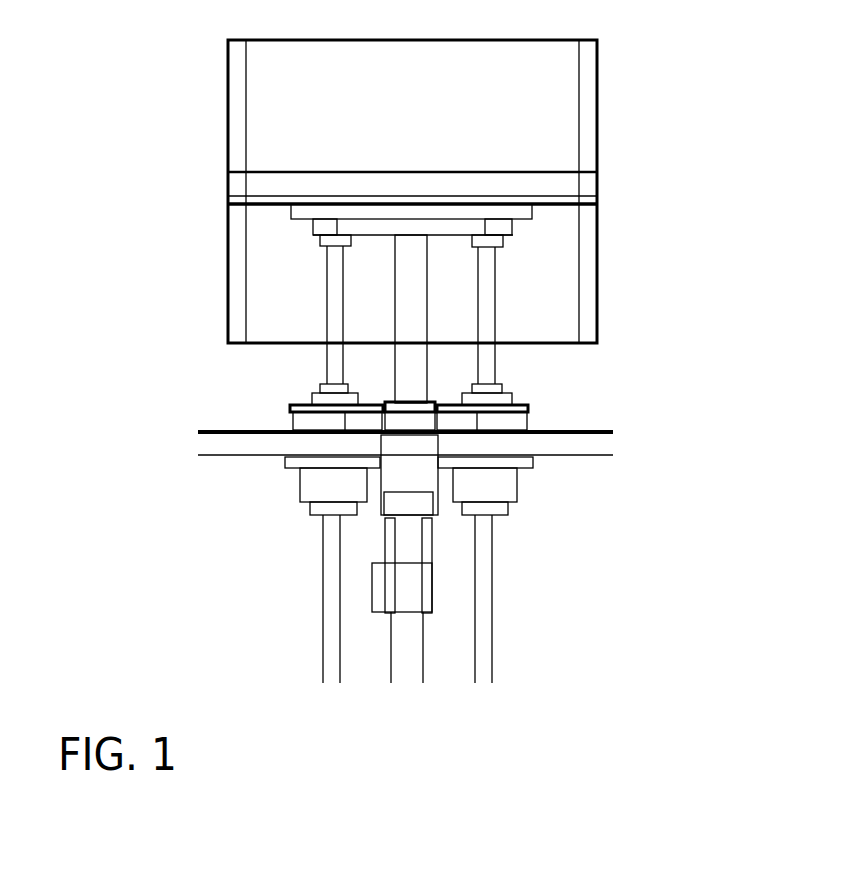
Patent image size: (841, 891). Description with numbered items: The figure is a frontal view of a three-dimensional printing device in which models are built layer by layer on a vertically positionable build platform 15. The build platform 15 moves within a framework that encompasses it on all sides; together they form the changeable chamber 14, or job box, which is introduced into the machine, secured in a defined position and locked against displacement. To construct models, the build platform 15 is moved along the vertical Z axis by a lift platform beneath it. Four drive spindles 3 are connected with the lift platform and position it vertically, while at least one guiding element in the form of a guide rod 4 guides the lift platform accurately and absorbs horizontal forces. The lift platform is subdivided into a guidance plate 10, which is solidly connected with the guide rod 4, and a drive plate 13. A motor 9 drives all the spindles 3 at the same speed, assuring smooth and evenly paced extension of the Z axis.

The changeable chamber 14 is at (525, 137).
The build platform 15 is at (557, 188).
The guidance plate 10 is at (357, 210).
The drive plate 13 is at (387, 229).
The guiding element 4 is at (413, 273).
The drive spindle 3 is at (335, 367).
The motor 9 is at (407, 563).